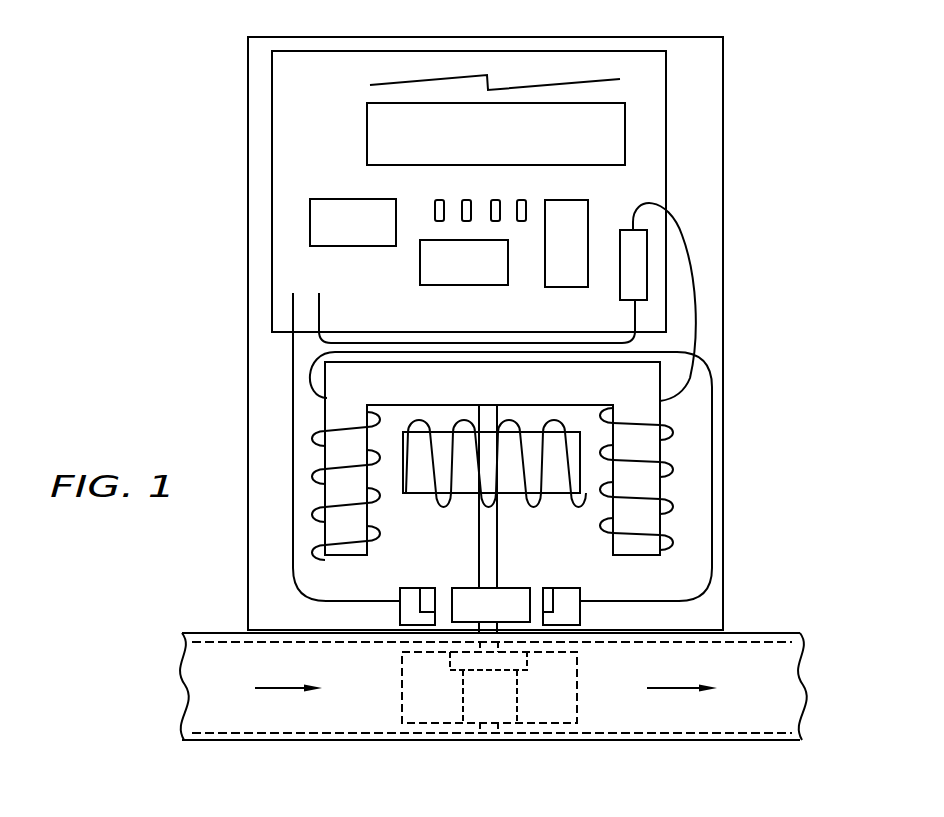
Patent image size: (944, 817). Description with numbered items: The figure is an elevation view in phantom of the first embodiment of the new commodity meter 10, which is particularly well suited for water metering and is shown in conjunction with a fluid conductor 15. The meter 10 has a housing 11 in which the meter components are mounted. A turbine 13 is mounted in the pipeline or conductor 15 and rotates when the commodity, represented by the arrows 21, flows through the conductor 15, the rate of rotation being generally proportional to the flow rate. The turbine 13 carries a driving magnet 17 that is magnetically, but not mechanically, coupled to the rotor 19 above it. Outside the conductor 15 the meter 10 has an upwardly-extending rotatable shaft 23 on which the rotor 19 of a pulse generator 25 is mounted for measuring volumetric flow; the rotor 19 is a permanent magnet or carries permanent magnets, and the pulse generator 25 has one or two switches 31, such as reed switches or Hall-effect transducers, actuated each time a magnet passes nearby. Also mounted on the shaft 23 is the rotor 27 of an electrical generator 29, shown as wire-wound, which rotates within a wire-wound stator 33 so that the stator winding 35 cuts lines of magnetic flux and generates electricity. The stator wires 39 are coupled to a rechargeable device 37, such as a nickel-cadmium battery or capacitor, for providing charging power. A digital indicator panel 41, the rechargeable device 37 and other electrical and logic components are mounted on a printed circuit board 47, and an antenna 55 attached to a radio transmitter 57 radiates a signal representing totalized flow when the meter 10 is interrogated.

The meter 10 is at (227, 328).
The housing 11 is at (247, 255).
The turbine 13 is at (403, 703).
The conductor 15 is at (773, 633).
The driving magnet 17 is at (527, 662).
The rotor 19 is at (517, 590).
The arrows 21 is at (283, 690).
The shaft 23 is at (498, 522).
The pulse generator 25 is at (342, 617).
The rotor 27 is at (410, 496).
The electrical generator 29 is at (688, 480).
The switch 31 is at (428, 606).
The stator 33 is at (647, 412).
The stator winding 35 is at (662, 432).
The rechargeable device 37 is at (648, 260).
The stator wires 39 is at (695, 302).
The digital indicator panel 41 is at (627, 120).
The printed circuit board 47 is at (666, 155).
The antenna 55 is at (553, 85).
The radio transmitter 57 is at (590, 200).